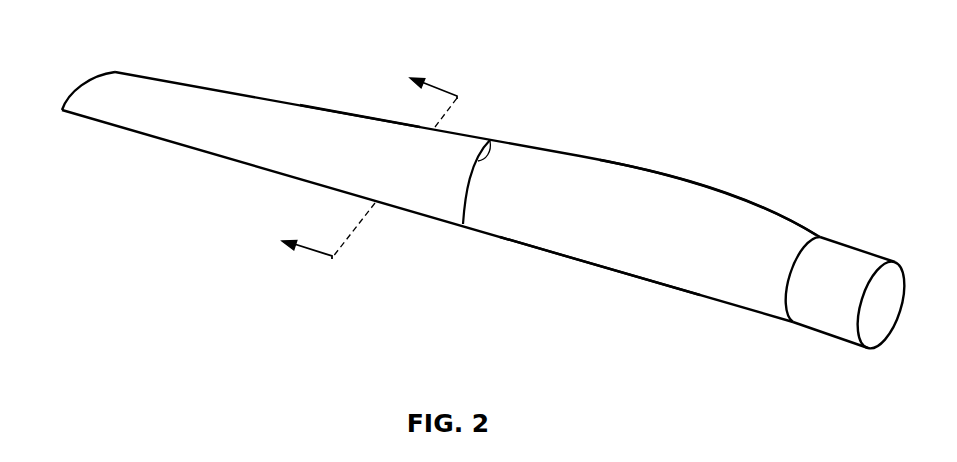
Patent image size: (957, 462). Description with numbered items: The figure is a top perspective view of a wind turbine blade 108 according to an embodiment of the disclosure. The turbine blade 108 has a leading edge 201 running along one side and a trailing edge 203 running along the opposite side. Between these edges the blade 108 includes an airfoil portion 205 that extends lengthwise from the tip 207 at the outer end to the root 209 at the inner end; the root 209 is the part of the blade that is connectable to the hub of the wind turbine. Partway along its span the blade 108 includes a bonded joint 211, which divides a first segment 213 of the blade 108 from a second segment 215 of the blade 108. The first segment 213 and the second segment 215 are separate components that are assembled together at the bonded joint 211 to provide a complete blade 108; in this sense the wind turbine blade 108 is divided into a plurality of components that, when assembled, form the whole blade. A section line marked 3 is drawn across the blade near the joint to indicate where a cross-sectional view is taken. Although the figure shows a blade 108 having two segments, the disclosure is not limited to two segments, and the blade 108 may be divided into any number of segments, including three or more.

The turbine blade 108 is at (598, 328).
The leading edge 201 is at (232, 163).
The trailing edge 203 is at (257, 95).
The airfoil portion 205 is at (624, 186).
The tip 207 is at (90, 84).
The root 209 is at (844, 261).
The bonded joint 211 is at (482, 160).
The first segment 213 is at (571, 247).
The second segment 215 is at (322, 120).
The section line 3- 3 is at (357, 161).